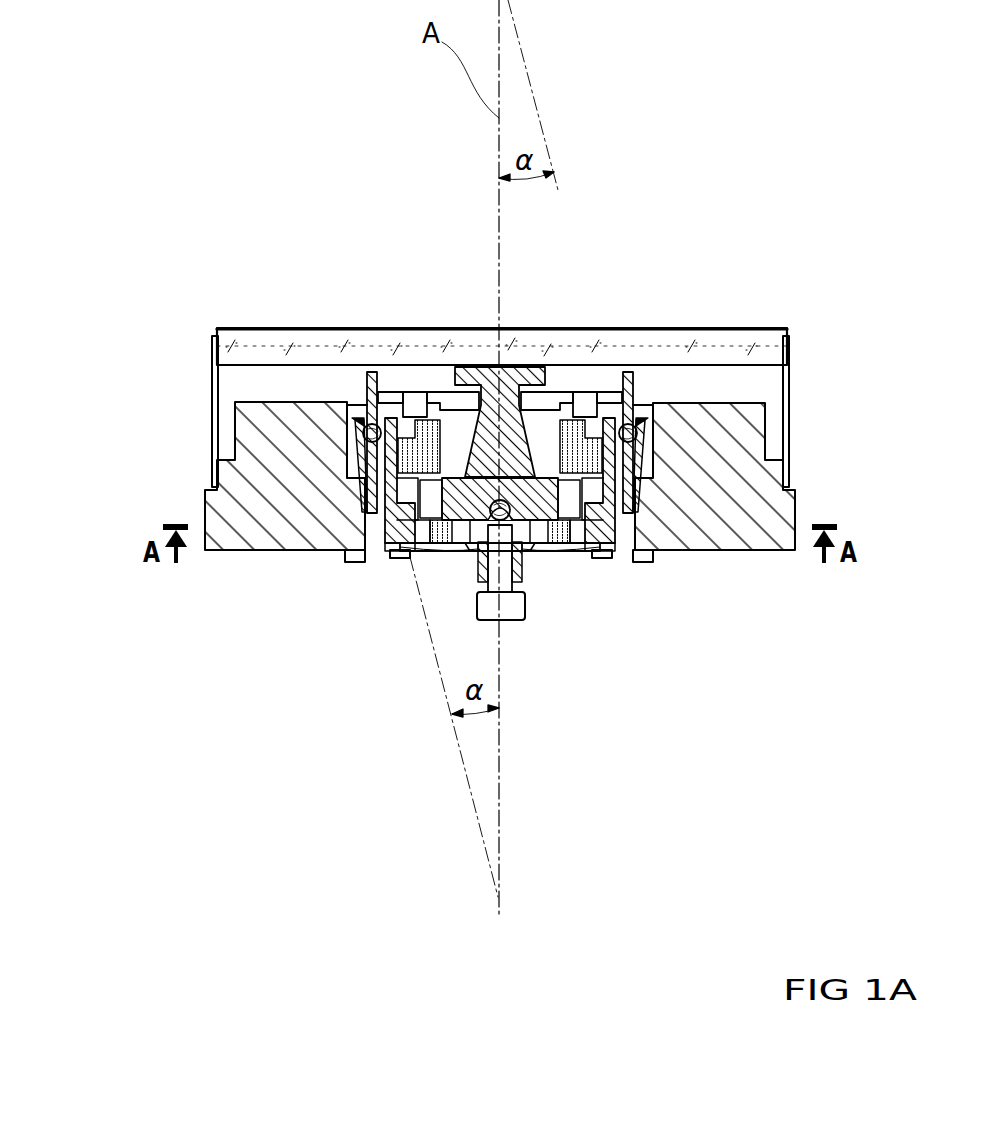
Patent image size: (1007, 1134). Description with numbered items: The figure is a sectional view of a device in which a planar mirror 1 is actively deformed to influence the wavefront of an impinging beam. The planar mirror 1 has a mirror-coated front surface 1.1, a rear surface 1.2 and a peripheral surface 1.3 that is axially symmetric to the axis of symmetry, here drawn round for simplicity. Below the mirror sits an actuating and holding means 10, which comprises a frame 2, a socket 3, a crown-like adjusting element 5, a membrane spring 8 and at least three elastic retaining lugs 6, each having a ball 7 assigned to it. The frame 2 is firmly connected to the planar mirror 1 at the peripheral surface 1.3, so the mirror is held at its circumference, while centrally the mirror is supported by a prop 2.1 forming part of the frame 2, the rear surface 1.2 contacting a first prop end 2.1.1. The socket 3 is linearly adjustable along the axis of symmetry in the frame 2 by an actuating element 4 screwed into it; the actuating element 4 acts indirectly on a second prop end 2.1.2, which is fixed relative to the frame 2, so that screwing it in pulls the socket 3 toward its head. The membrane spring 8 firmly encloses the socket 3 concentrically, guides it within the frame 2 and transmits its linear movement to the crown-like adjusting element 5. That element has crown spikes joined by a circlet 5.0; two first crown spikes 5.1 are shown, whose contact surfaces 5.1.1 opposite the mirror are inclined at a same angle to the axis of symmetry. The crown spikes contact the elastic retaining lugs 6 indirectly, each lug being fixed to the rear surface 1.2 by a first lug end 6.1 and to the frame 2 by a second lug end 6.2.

The planar mirror 1 is at (70, 258).
The mirror-coated front surface 1.1 is at (245, 328).
The rear surface 1.2 is at (250, 365).
The peripheral surface 1.3 is at (214, 352).
The frame 2 is at (715, 555).
The prop 2.1 is at (585, 555).
The first prop end 2.1.1 is at (586, 390).
The second prop end 2.1.2 is at (548, 556).
The socket 3 is at (442, 558).
The actuating element 4 is at (463, 560).
The crown-like adjusting element 5 is at (930, 280).
The circlet 5.0 is at (790, 405).
The first crown spike 5.1 is at (790, 365).
The contact surface 5.1.1 is at (458, 370).
The elastic retaining lug 6 is at (366, 395).
The first lug end 6.1 is at (372, 423).
The second lug end 6.2 is at (336, 549).
The ball 7 is at (338, 405).
The membrane spring 8 is at (462, 546).
The actuating and holding means 10 is at (797, 585).